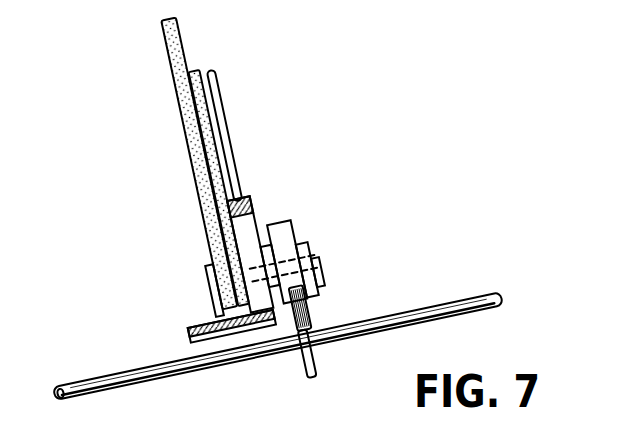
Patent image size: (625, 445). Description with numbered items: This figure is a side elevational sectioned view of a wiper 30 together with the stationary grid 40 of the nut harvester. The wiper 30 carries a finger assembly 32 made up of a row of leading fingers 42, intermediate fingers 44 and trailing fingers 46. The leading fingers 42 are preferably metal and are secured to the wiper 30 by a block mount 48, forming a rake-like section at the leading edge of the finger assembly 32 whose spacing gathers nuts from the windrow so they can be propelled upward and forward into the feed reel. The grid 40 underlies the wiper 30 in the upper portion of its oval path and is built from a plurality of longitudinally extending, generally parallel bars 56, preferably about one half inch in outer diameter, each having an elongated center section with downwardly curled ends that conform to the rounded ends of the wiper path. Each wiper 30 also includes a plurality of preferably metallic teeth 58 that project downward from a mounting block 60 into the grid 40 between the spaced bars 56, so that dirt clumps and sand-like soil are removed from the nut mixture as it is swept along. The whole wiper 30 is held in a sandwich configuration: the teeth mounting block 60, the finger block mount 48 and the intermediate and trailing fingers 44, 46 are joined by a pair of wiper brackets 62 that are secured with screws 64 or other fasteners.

The wiper 30 is at (354, 196).
The finger assembly 32 is at (188, 168).
The stationary grid 40 is at (483, 288).
The leading fingers 42 is at (219, 97).
The intermediate fingers 44 is at (194, 72).
The trailing fingers 46 is at (178, 88).
The block mount 48 is at (250, 208).
The bars 56 is at (462, 313).
The teeth 58 is at (318, 373).
The mounting block 60 is at (297, 225).
The wiper brackets 62 is at (316, 293).
The screws 64 is at (317, 268).